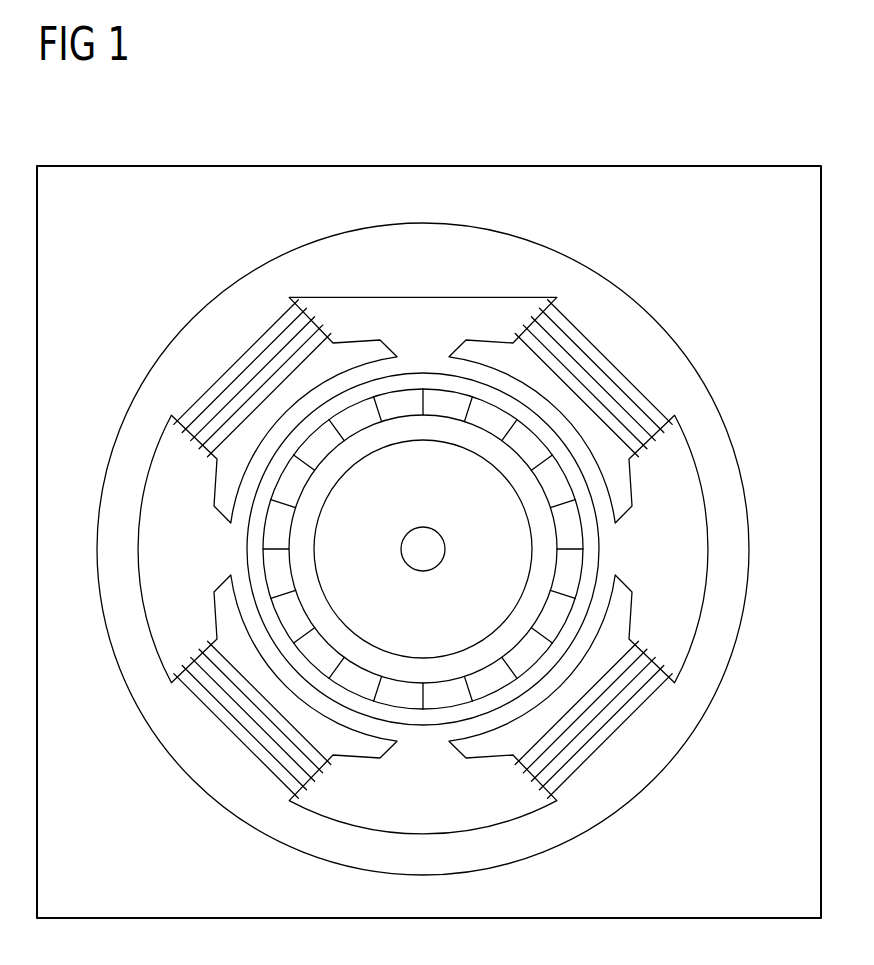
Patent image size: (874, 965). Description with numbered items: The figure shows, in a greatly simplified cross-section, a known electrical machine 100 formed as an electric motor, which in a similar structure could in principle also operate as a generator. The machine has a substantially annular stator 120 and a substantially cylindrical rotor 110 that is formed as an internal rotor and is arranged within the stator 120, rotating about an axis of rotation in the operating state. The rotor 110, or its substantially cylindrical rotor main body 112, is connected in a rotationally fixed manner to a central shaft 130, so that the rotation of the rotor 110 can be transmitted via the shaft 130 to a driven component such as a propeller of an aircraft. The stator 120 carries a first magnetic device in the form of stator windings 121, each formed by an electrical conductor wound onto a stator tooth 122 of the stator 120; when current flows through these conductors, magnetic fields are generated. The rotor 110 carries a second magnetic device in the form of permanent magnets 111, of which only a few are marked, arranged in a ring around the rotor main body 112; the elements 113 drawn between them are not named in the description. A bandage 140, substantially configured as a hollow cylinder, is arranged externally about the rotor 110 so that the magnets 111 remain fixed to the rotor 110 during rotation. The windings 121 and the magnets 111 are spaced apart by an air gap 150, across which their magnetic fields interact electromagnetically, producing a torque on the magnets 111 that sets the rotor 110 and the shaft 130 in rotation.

The electrical machine 100 is at (383, 143).
The rotor 110 is at (500, 601).
The permanent magnets 111 is at (452, 402).
The rotor main body 112 is at (318, 567).
The magnet spacers 113 is at (507, 440).
The stator 120 is at (490, 252).
The stator windings 121 is at (253, 385).
The stator tooth 122 is at (227, 493).
The shaft 130 is at (416, 546).
The bandage 140 is at (248, 560).
The air gap 150 is at (446, 365).